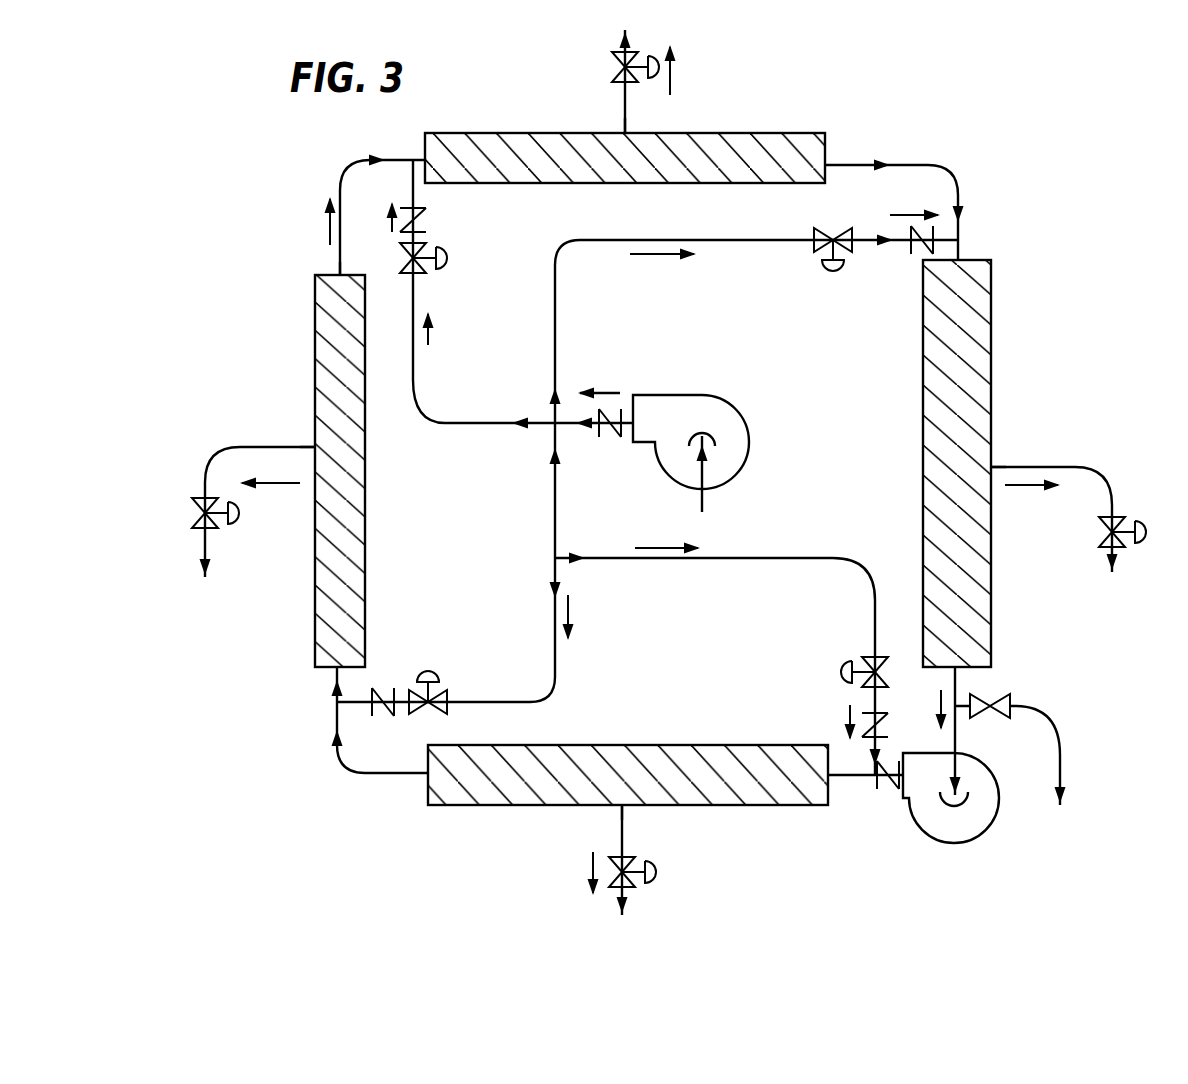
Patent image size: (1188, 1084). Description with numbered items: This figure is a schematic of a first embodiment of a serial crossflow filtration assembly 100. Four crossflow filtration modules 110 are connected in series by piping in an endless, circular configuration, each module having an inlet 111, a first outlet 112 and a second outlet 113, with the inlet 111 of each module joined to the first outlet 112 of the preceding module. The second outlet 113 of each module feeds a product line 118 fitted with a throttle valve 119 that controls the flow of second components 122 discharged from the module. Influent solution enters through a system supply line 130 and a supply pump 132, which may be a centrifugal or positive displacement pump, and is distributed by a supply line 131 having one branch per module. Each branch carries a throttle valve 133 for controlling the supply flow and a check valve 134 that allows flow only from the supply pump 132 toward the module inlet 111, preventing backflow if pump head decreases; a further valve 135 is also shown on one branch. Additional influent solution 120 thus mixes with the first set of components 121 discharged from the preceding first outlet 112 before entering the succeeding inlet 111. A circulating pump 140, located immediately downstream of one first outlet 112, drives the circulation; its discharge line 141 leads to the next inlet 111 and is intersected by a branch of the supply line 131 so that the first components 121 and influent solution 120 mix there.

The crossflow filtration assembly 100 is at (209, 195).
The crossflow filtration module 110 is at (596, 186).
The inlet 111 is at (420, 152).
The first outlet 112 is at (830, 154).
The second outlet 113 is at (628, 140).
The product line 118 is at (622, 118).
The throttle valve 119 is at (615, 68).
The influent solution 120 is at (562, 445).
The first set of components 121 is at (975, 190).
The second components 122 is at (650, 470).
The system supply line 130 is at (708, 498).
The supply line 131 is at (553, 352).
The supply pump 132 is at (698, 405).
The throttle valve 133 is at (428, 280).
The check valve 134 is at (432, 214).
The control valve 135 is at (850, 670).
The circulating pump 140 is at (968, 832).
The discharge line 141 is at (882, 787).